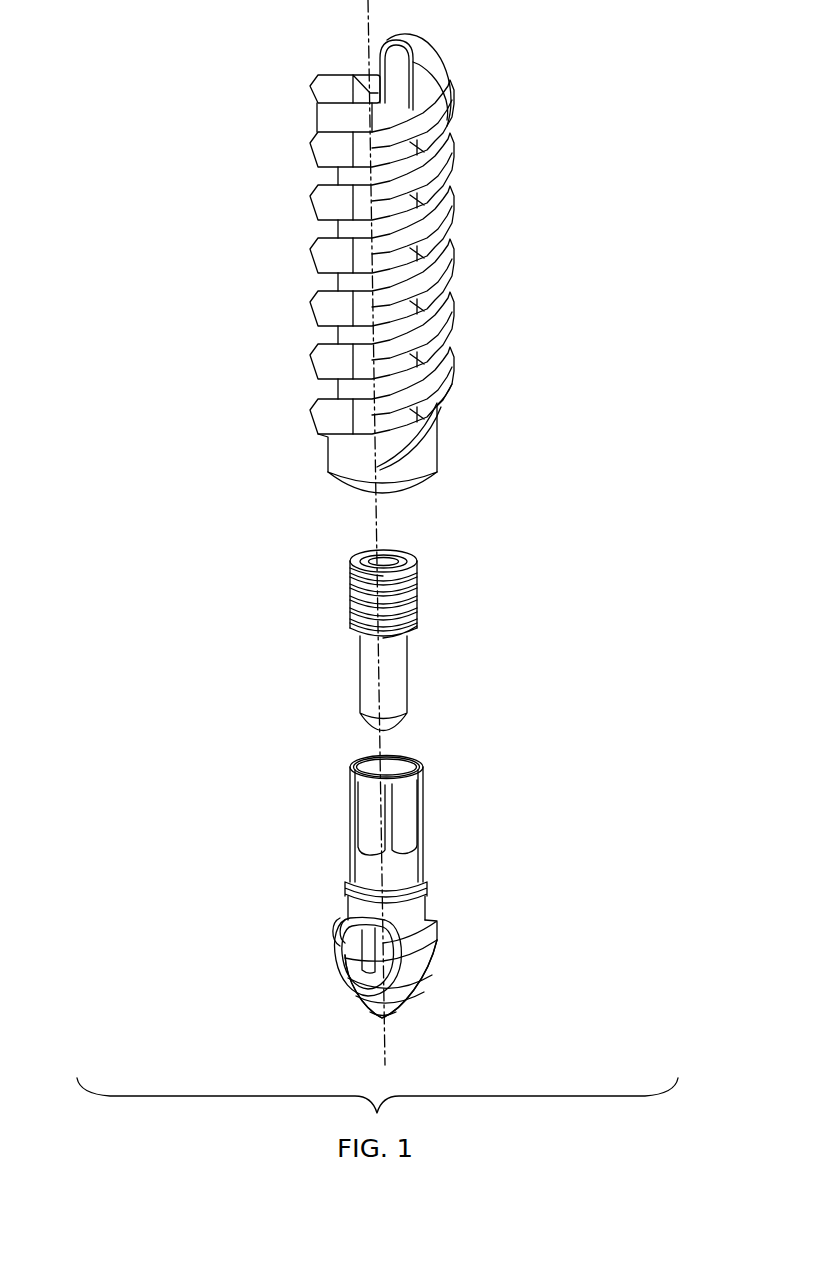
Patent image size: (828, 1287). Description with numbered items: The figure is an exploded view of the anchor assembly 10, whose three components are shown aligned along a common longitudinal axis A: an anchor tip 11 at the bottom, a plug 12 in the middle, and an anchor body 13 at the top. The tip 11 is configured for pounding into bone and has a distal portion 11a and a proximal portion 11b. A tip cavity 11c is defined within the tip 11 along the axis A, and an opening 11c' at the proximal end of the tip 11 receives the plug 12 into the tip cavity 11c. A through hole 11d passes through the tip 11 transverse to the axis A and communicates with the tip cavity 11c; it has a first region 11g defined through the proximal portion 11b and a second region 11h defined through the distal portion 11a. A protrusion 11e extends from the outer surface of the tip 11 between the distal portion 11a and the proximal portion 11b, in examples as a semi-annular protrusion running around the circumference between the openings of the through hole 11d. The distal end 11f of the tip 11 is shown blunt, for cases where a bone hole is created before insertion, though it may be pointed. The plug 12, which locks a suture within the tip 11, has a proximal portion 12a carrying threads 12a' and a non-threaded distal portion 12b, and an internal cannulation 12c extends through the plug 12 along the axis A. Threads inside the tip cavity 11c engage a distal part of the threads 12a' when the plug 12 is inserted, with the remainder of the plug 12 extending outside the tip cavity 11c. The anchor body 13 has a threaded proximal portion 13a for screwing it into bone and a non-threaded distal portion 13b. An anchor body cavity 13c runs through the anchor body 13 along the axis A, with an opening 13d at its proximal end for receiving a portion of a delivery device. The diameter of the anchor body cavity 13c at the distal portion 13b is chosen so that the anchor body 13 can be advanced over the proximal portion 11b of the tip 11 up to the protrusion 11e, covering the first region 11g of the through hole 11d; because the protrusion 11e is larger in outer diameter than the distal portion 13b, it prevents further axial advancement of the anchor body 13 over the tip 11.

The anchor assembly 10 is at (108, 196).
The longitudinal axis A is at (371, 523).
The anchor tip 11 is at (516, 810).
The distal portion 11a is at (436, 982).
The proximal portion 11b is at (411, 913).
The tip cavity 11c is at (420, 795).
The opening 11c' is at (331, 788).
The through hole 11d is at (342, 928).
The protrusion 11e is at (439, 930).
The distal end 11f is at (400, 1022).
The first region 11g is at (347, 912).
The second region 11h is at (347, 989).
The plug 12 is at (516, 584).
The proximal portion 12a is at (421, 594).
The threads 12a' is at (320, 581).
The distal portion 12b is at (369, 694).
The internal cannulation 12c is at (394, 561).
The anchor body 13 is at (540, 248).
The threaded proximal portion 13a is at (441, 206).
The non-threaded distal portion 13b is at (344, 482).
The anchor body cavity 13c is at (400, 91).
The opening 13d is at (352, 48).